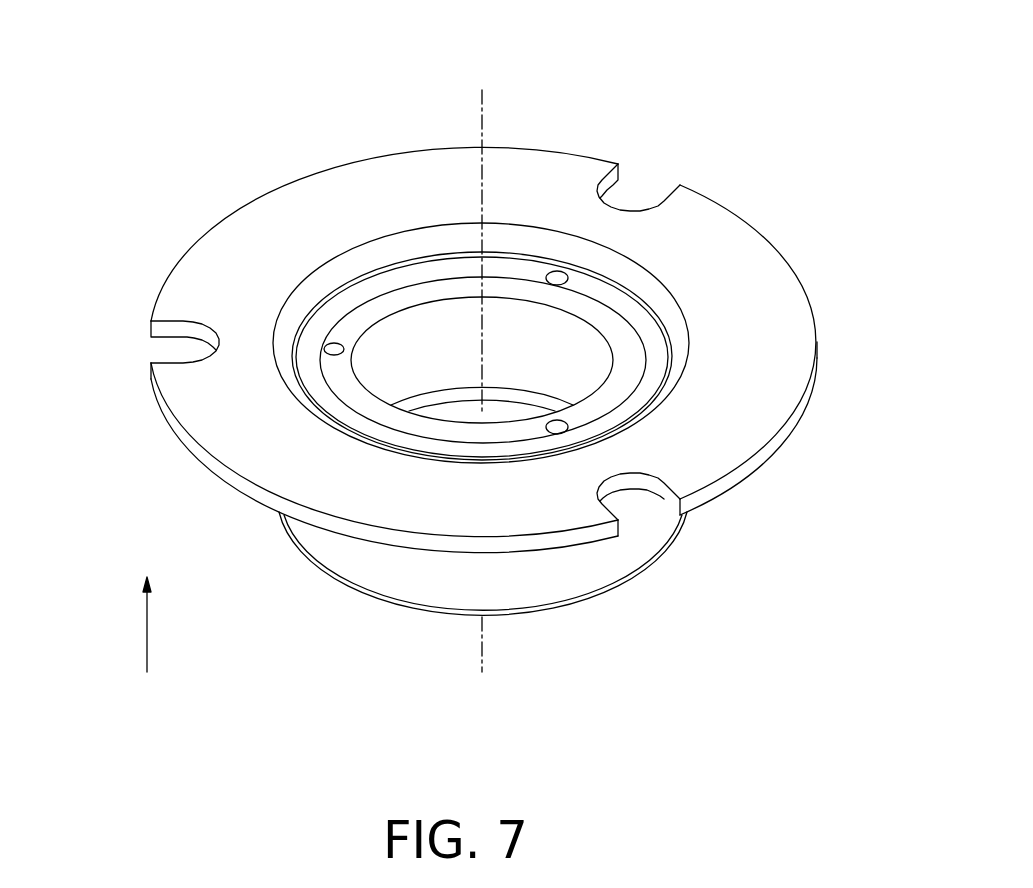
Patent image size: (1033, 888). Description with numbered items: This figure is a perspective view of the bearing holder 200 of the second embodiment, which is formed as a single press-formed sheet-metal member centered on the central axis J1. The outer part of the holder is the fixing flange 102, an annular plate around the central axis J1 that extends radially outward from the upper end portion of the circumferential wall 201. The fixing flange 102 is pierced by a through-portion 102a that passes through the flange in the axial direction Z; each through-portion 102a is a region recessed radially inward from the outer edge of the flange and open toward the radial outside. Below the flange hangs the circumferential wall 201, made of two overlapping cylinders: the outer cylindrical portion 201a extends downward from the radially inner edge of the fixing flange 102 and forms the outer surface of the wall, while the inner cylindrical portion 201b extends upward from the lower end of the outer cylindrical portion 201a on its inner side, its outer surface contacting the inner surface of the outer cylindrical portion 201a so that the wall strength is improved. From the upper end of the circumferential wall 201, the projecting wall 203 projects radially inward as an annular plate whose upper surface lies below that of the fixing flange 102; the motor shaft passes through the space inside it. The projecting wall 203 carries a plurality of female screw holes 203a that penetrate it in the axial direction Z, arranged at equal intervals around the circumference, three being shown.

The bearing holder 200 is at (670, 100).
The central axis J1 is at (484, 100).
The axial direction Z is at (145, 608).
The fixing flange 102 is at (752, 422).
The through-portion 102a is at (615, 196).
The projecting wall 203 is at (370, 400).
The female screw hole 203a is at (336, 343).
The circumferential wall 201 is at (632, 670).
The outer cylindrical portion 201a is at (582, 570).
The inner cylindrical portion 201b is at (466, 455).